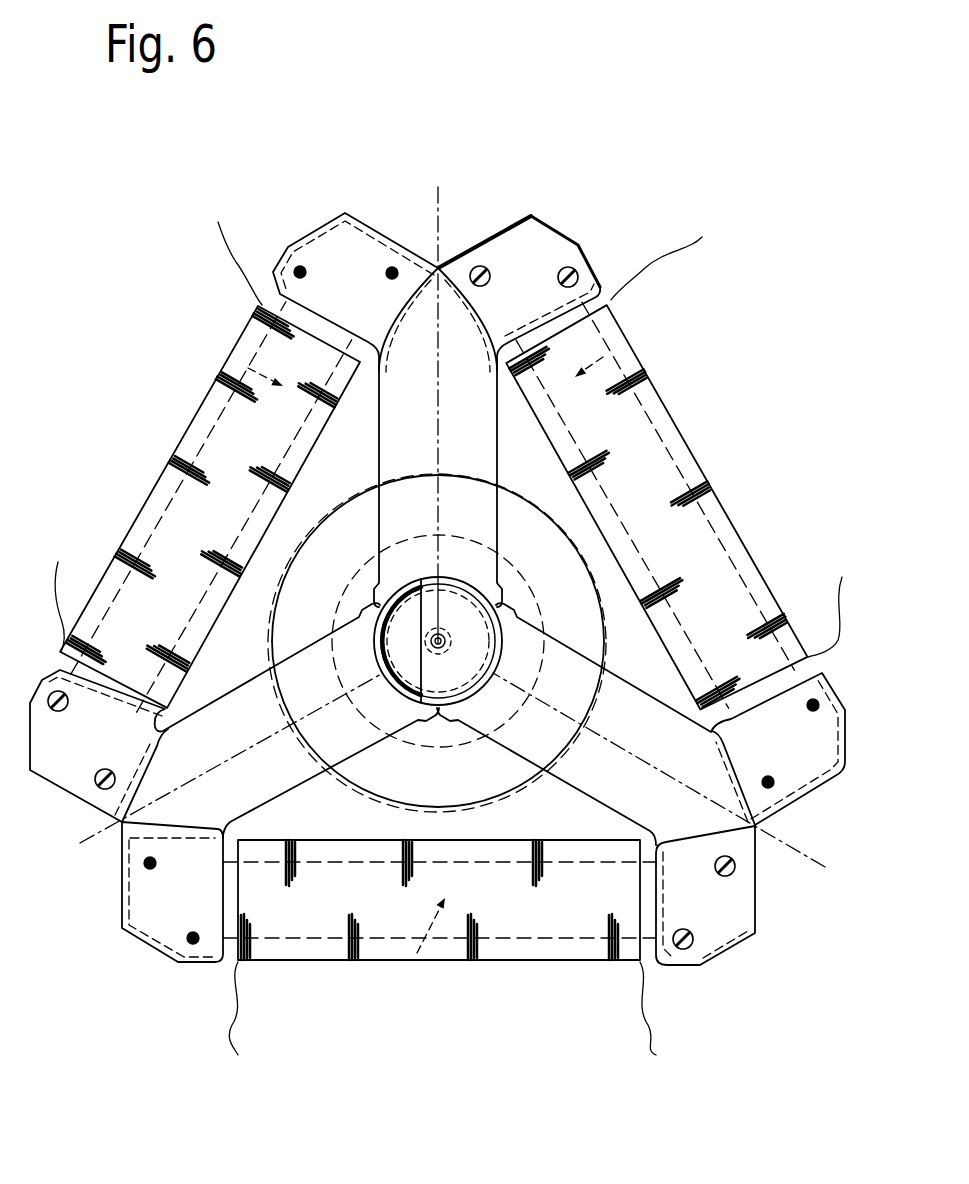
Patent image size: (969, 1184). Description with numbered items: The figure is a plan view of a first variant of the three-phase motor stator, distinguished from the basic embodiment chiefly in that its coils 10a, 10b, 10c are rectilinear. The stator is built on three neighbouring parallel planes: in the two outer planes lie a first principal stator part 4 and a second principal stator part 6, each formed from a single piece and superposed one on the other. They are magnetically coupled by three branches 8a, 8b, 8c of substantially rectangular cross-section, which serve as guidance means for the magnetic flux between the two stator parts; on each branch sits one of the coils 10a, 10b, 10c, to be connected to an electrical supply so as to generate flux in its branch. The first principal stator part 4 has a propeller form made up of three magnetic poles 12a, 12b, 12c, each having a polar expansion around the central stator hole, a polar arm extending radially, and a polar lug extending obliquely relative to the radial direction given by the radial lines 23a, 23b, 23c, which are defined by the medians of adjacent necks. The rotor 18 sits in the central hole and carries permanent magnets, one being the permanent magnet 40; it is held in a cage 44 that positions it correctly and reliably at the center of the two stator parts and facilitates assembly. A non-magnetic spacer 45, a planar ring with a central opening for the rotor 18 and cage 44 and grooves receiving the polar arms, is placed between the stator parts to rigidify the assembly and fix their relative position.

The first principal stator part 4 is at (437, 609).
The second principal stator part 6 is at (503, 221).
The branch 8a is at (628, 340).
The branch 8b is at (418, 957).
The branch 8c is at (252, 346).
The coil 10a is at (665, 414).
The coil 10b is at (453, 947).
The coil 10c is at (197, 437).
The magnetic pole 12a is at (614, 742).
The magnetic pole 12b is at (250, 778).
The magnetic pole 12c is at (458, 421).
The rotor 18 is at (411, 665).
The radial line 23a is at (812, 858).
The radial line 23b is at (98, 842).
The radial line 23c is at (442, 214).
The permanent magnet 40 is at (408, 617).
The cage 44 is at (447, 656).
The spacer 45 is at (567, 580).